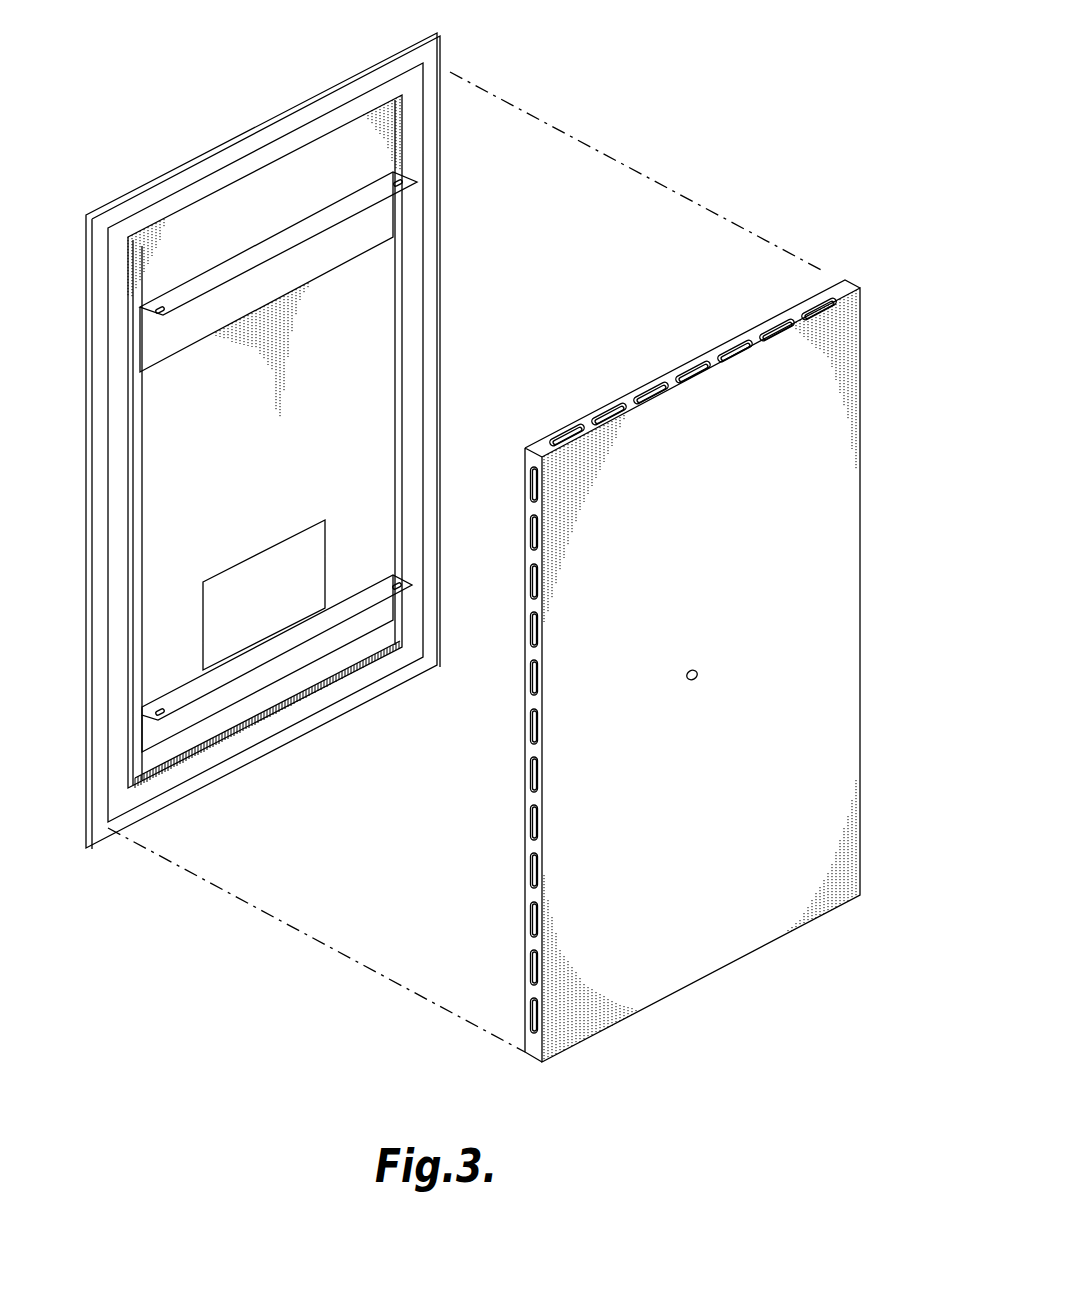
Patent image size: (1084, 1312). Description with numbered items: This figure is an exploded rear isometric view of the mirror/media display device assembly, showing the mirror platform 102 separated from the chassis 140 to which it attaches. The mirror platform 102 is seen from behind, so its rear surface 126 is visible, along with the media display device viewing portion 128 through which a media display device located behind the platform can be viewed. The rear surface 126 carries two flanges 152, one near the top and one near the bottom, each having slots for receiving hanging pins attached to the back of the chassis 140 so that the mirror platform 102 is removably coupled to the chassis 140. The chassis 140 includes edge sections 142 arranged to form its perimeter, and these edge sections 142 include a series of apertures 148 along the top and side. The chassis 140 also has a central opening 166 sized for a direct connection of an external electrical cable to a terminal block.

The mirror platform 102 is at (280, 749).
The rear surface 126 is at (382, 355).
The media display device viewing portion 128 is at (325, 563).
The chassis 140 is at (720, 969).
The edge sections 142 is at (842, 282).
The apertures 148 is at (600, 418).
The flanges 152 is at (357, 243).
The central opening 166 is at (697, 680).